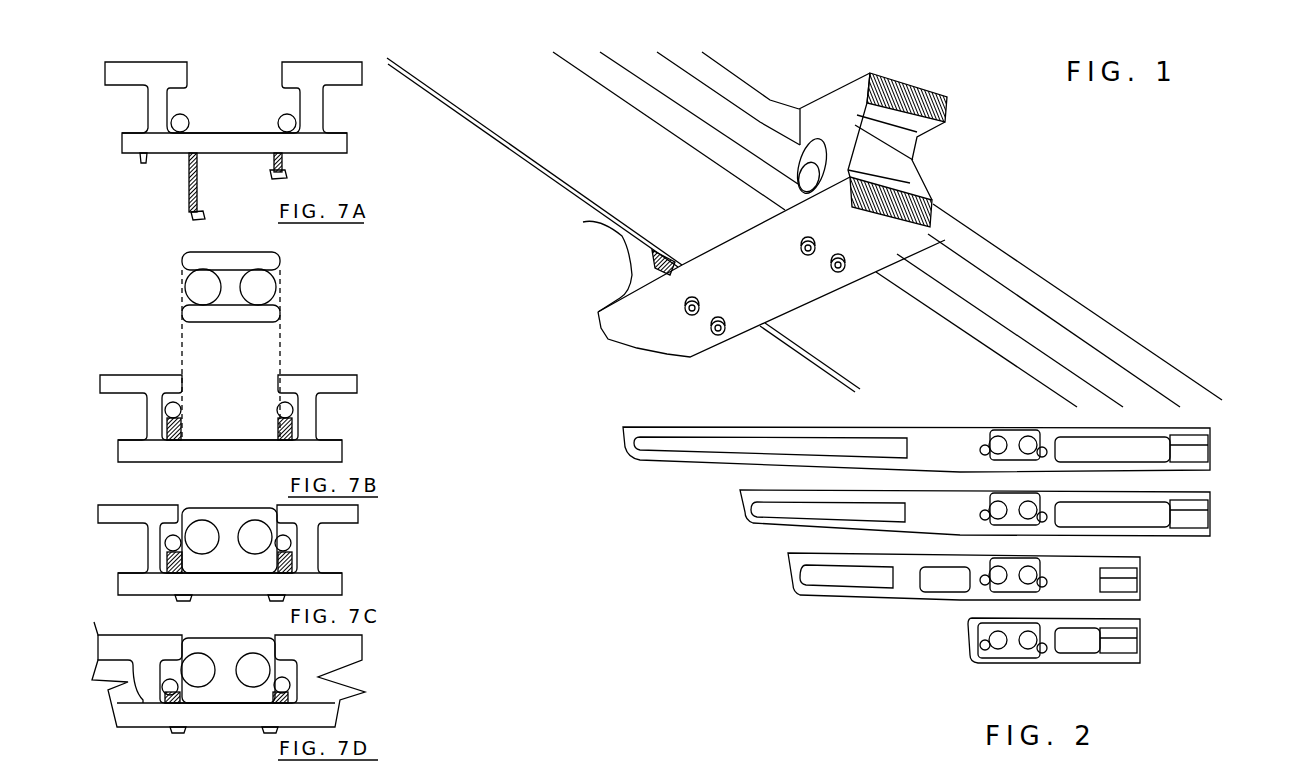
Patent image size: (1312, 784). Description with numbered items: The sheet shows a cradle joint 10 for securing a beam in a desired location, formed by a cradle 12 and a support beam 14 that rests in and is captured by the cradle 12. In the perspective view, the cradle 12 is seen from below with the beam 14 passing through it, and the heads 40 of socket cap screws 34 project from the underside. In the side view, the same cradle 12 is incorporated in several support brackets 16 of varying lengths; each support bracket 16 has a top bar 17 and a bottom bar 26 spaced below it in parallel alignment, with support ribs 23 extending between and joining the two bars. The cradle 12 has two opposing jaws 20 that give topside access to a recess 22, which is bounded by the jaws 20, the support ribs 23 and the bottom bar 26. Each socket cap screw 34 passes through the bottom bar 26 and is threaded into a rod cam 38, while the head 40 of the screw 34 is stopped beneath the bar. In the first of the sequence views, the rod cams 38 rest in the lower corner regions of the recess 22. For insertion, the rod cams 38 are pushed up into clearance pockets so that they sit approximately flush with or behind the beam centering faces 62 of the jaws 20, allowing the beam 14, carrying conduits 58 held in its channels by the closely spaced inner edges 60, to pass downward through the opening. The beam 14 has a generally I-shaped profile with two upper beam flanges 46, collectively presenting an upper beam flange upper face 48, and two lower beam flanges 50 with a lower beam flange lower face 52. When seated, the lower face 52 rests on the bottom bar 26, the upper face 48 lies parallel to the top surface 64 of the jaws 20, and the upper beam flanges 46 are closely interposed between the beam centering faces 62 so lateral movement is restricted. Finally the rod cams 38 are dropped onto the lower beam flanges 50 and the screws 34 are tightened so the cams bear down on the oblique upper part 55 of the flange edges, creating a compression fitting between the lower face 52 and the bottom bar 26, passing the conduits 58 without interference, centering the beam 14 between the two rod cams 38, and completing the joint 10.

In FIG. 1, the cradle joint 10 is at (1017, 183).
In FIG. 2, the cradle joint 10 is at (975, 416).
In FIG. 1, the cradle 12 is at (616, 234).
In FIG. 2, the cradle 12 is at (1022, 475).
In FIG. 7A, the cradle 12 is at (142, 156).
In FIG. 7B, the cradle 12 is at (228, 418).
In FIG. 7C, the cradle 12 is at (228, 553).
In FIG. 7D, the cradle 12 is at (228, 677).
In FIG. 1, the support beam 14 is at (520, 166).
In FIG. 2, the support beam 14 is at (1023, 428).
In FIG. 7B, the support beam 14 is at (225, 252).
In FIG. 7C, the support beam 14 is at (184, 505).
In FIG. 7D, the support beam 14 is at (250, 638).
In FIG. 2, the support bracket 16 is at (667, 463).
In FIG. 2, the top bar 17 is at (1107, 428).
In FIG. 7C, the jaws 20 is at (140, 533).
In FIG. 7A, the recess 22 is at (228, 100).
In FIG. 7B, the recess 22 is at (229, 434).
In FIG. 7C, the recess 22 is at (143, 530).
In FIG. 1, the support ribs 23 is at (630, 268).
In FIG. 2, the support ribs 23 is at (1063, 452).
In FIG. 7A, the support ribs 23 is at (146, 108).
In FIG. 7B, the support ribs 23 is at (138, 417).
In FIG. 2, the bottom bar 26 is at (1107, 473).
In FIG. 7C, the bottom bar 26 is at (235, 564).
In FIG. 7A, the socket cap screw 34 is at (198, 186).
In FIG. 7D, the socket cap screw 34 is at (175, 730).
In FIG. 1, the rod cam 38 is at (803, 143).
In FIG. 7A, the rod cam 38 is at (277, 123).
In FIG. 7B, the rod cam 38 is at (182, 405).
In FIG. 7C, the rod cam 38 is at (228, 554).
In FIG. 7D, the rod cam 38 is at (167, 667).
In FIG. 1, the head 40 is at (818, 262).
In FIG. 7A, the head 40 is at (192, 215).
In FIG. 7B, the upper beam flanges 46 is at (198, 260).
In FIG. 7A, the upper beam flange upper face 48 is at (288, 174).
In FIG. 7C, the upper beam flange upper face 48 is at (240, 505).
In FIG. 1, the lower beam flanges 50 is at (1033, 343).
In FIG. 7B, the lower beam flanges 50 is at (260, 315).
In FIG. 7D, the lower beam flanges 50 is at (255, 698).
In FIG. 7C, the lower beam flange lower face 52 is at (218, 573).
In FIG. 7D, the oblique upper part 55 is at (338, 690).
In FIG. 7B, the conduit 58 is at (285, 284).
In FIG. 7C, the conduit 58 is at (140, 552).
In FIG. 7D, the inner edges 60 is at (168, 692).
In FIG. 7B, the beam centering faces 62 is at (185, 385).
In FIG. 7C, the top surface 64 is at (152, 505).